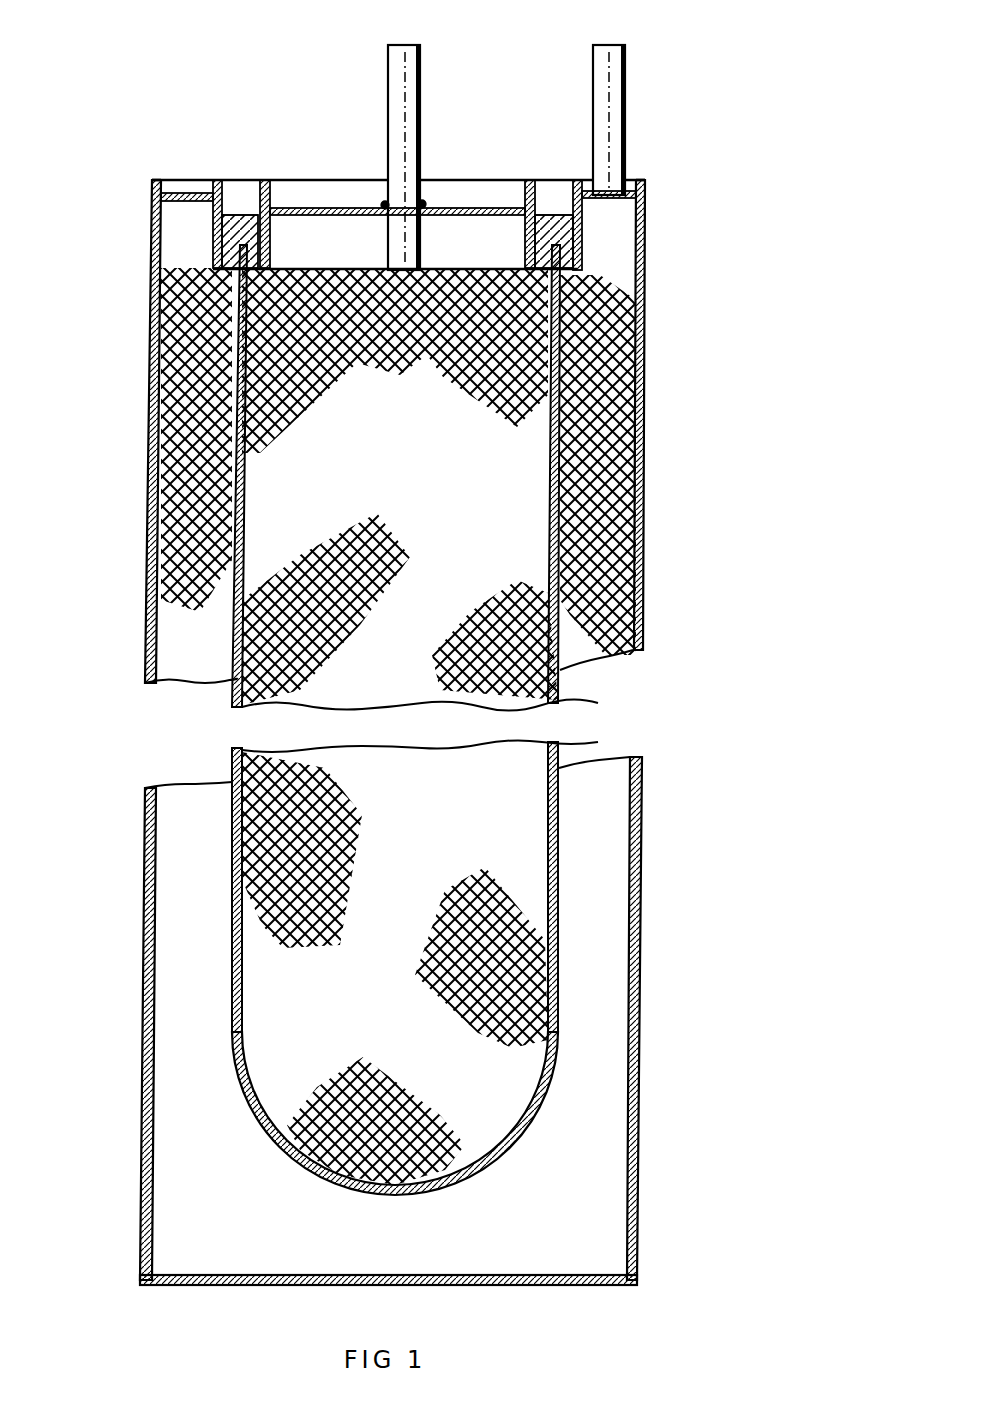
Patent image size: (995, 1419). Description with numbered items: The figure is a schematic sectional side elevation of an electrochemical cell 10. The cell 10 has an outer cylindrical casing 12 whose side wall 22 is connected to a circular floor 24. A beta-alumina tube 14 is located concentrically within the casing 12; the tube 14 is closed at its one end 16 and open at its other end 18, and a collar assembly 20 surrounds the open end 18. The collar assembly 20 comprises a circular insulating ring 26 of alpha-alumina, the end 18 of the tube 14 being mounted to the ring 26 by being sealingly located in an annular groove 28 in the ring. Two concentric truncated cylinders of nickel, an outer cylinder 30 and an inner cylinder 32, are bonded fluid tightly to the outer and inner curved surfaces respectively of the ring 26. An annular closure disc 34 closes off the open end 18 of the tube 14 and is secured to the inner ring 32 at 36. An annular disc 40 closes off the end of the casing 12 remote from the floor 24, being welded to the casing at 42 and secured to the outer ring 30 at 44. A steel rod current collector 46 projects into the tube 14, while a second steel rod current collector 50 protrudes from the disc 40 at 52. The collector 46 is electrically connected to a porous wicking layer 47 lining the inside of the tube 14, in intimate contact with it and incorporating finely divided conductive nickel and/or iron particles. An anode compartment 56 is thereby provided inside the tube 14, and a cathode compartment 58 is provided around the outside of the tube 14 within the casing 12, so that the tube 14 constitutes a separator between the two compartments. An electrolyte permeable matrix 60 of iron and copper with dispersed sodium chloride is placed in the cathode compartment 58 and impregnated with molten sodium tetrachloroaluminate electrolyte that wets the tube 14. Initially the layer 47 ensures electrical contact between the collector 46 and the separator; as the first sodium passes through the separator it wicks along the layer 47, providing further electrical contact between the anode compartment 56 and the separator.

The electrochemical cell 10 is at (748, 66).
The outer cylindrical casing 12 is at (416, 431).
The beta-alumina tube 14 is at (558, 540).
The closed end of tube 16 is at (337, 1193).
The open end of tube 18 is at (357, 300).
The collar assembly 20 is at (202, 256).
The side wall 22 is at (643, 967).
The circular floor 24 is at (507, 1277).
The circular insulating ring 26 is at (213, 225).
The annular groove 28 is at (262, 242).
The outer truncated cylinder 30 is at (213, 220).
The inner truncated cylinder 32 is at (297, 208).
The annular closure disc 34 is at (360, 180).
The securing location of closure disc 36 is at (243, 196).
The annular disc 40 is at (190, 180).
The weld to casing 42 is at (148, 192).
The securing location to ring 44 is at (226, 197).
The steel rod current collector 46 is at (413, 82).
The porous wicking layer 47 is at (438, 282).
The steel rod current collector 50 is at (610, 82).
The protrusion location 52 is at (605, 188).
The anode compartment 56 is at (507, 507).
The cathode compartment 58 is at (596, 845).
The electrolyte permeable matrix 60 is at (200, 534).